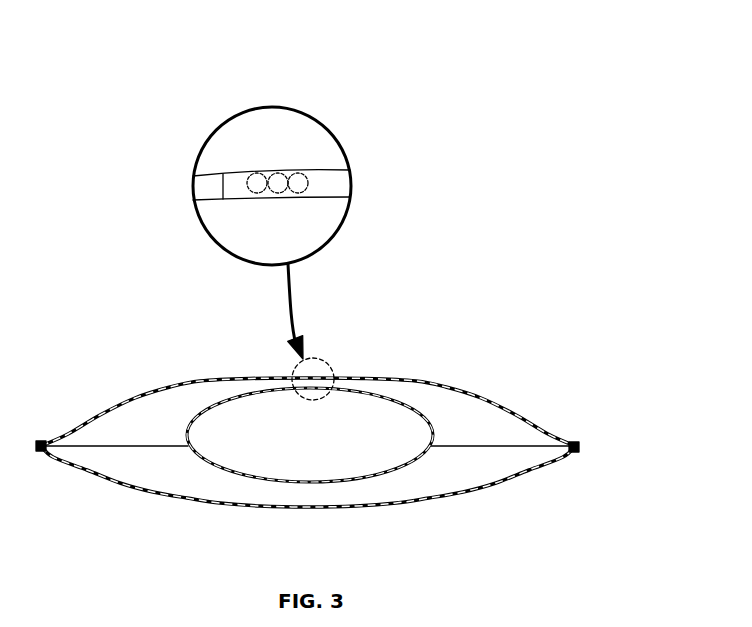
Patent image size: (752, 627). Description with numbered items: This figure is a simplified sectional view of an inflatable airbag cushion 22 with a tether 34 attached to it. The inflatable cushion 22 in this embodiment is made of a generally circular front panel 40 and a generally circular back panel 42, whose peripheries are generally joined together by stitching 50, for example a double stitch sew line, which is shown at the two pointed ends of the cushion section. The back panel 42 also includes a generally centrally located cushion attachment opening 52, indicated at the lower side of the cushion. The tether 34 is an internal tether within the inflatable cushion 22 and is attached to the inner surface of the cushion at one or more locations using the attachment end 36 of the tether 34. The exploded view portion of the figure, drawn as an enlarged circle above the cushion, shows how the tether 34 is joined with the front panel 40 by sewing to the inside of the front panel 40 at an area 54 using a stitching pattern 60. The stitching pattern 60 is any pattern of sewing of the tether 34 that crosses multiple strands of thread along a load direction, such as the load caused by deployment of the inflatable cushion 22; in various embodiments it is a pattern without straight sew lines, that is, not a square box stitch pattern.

The inflatable cushion 22 is at (542, 395).
The tether 34 is at (432, 433).
The attachment end 36 is at (237, 160).
The front panel 40 is at (415, 378).
The back panel 42 is at (437, 503).
The stitching 50 is at (43, 452).
The cushion attachment opening 52 is at (306, 516).
The area 54 is at (296, 365).
The stitching pattern 60 is at (319, 180).